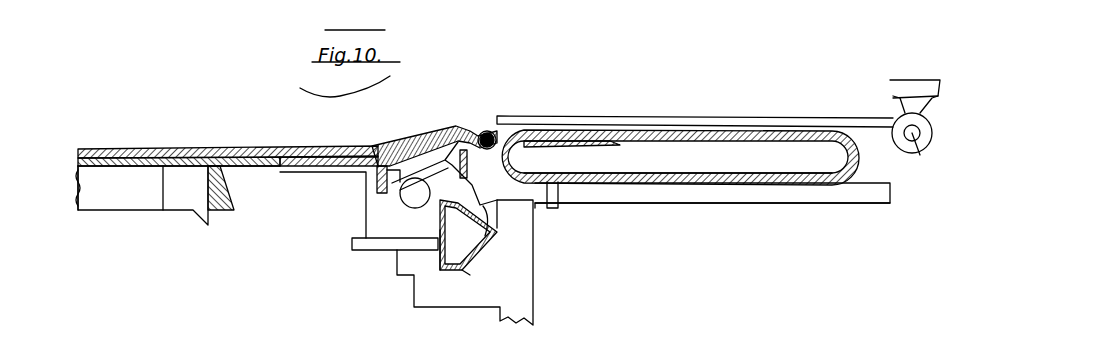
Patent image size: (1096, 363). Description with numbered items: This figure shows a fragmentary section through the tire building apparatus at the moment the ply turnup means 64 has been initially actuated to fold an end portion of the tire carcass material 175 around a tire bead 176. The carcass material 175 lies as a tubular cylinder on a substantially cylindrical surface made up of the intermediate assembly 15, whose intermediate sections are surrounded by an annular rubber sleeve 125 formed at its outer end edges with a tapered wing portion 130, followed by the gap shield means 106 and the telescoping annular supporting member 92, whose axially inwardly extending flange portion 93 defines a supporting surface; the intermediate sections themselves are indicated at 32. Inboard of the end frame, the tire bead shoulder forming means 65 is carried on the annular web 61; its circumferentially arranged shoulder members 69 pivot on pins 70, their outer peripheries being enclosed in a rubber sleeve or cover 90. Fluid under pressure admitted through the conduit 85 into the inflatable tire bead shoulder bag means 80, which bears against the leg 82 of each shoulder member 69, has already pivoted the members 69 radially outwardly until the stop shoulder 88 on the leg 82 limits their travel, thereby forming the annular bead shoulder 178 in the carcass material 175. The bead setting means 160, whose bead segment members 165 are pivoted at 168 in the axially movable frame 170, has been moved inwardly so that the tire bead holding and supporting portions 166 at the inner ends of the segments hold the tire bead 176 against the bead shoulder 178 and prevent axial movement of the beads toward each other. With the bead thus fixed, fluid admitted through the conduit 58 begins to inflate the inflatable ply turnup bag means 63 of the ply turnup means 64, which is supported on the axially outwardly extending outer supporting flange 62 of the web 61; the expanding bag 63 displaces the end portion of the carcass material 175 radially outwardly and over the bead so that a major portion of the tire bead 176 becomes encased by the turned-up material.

The intermediate assembly 15 is at (89, 219).
The wall panel 32 is at (134, 195).
The annular rubber sleeve 125 is at (165, 208).
The tapered wing portion 130 is at (226, 212).
The gap shield means 106 is at (252, 168).
The tire carcass material 175 is at (249, 148).
The annular bead shoulder 178 is at (462, 126).
The tire bead 176 is at (491, 128).
The tire bead holding and supporting portion 166 is at (487, 129).
The annular rubber sleeve or cover 90 is at (410, 144).
The shoulder member 69 is at (438, 132).
The flange portion 93 is at (310, 176).
The annular supporting member 92 is at (367, 198).
The pin 70 is at (411, 196).
The leg 82 is at (493, 240).
The inflatable tire bead shoulder bag means 80 is at (438, 258).
The stop shoulder 88 is at (500, 206).
The conduit 85 is at (358, 246).
The annular web 61 is at (539, 307).
The tire bead shoulder forming means 65 is at (476, 276).
The bead setting means 160 is at (819, 101).
The bead segment member 165 is at (754, 72).
The ply turnup means 64 is at (766, 175).
The inflatable ply turnup bag means 63 is at (793, 185).
The outer supporting flange 62 is at (697, 190).
The conduit 58 is at (558, 206).
The frame 170 is at (905, 80).
The pivot 168 is at (912, 140).